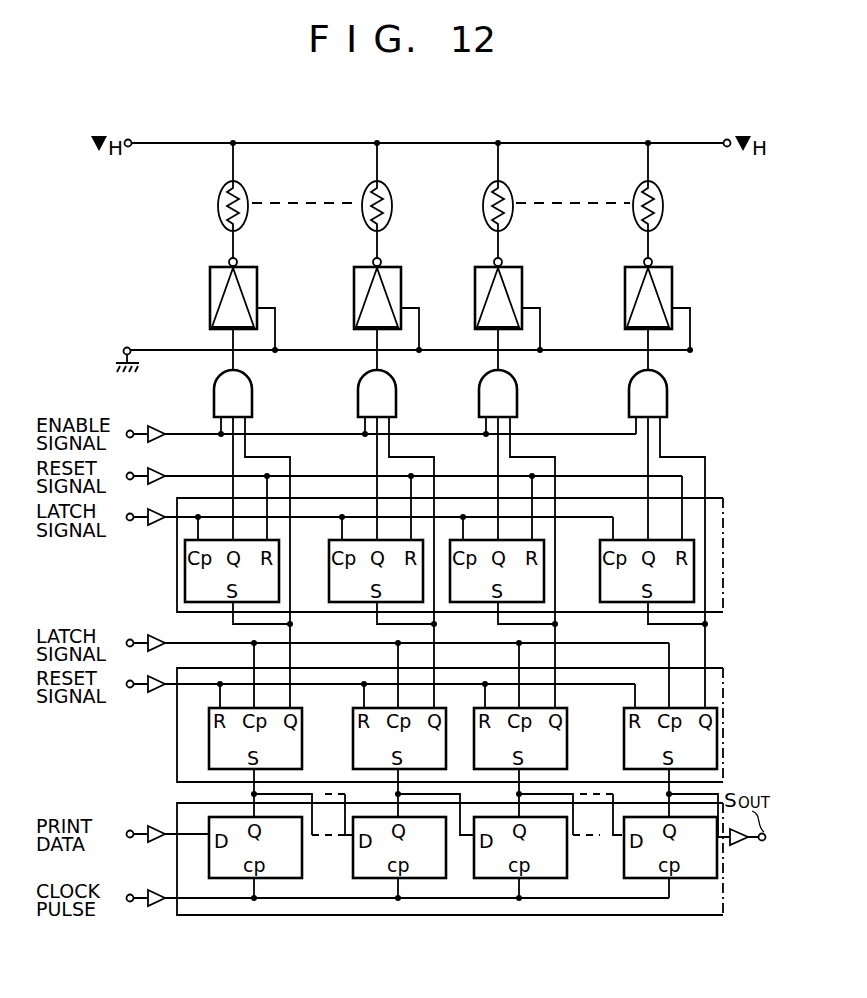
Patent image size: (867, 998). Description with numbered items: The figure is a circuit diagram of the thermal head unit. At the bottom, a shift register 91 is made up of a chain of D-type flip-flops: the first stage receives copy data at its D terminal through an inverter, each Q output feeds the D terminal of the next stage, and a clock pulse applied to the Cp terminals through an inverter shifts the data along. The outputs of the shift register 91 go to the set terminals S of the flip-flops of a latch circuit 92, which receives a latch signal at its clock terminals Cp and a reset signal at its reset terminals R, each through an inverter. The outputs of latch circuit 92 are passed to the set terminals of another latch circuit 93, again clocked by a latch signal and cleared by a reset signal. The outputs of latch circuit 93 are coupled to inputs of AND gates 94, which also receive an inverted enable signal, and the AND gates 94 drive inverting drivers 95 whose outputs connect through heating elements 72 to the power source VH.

The heating elements 72 is at (262, 190).
The drivers 95 is at (258, 283).
The AND gates 94 is at (253, 396).
The latch circuit 93 is at (740, 604).
The latch circuit 92 is at (741, 760).
The shift register 91 is at (740, 900).